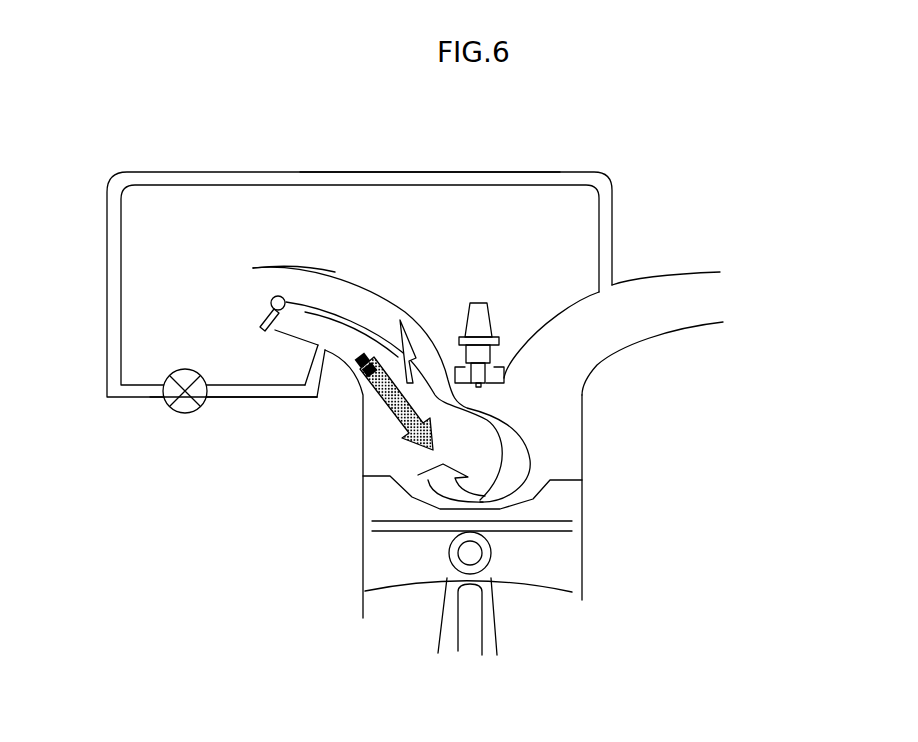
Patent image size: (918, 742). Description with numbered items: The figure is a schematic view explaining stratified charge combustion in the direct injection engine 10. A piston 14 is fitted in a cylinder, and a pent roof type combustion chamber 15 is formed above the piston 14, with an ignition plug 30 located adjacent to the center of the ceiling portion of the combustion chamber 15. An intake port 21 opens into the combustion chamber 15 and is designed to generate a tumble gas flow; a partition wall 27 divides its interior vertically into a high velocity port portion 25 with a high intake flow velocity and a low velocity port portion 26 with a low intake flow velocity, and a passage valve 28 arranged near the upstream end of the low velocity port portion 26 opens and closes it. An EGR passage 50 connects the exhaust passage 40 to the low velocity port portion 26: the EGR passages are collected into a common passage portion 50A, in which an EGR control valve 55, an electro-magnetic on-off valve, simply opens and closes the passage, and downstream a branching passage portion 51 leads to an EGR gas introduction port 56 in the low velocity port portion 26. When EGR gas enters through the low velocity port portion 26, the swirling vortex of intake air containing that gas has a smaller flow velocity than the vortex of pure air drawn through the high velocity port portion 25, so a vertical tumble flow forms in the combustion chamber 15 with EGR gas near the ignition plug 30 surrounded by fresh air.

The direct injection engine 10 is at (193, 153).
The EGR passage 50 is at (286, 166).
The common passage portion 50A is at (443, 180).
The intake port 21 is at (277, 280).
The high velocity port portion 25 is at (351, 291).
The partition wall 27 is at (333, 282).
The passage valve 28 is at (258, 330).
The low velocity port portion 26 is at (300, 335).
The ignition plug 30 is at (480, 303).
The exhaust passage 40 is at (604, 334).
The combustion chamber 15 is at (579, 436).
The piston 14 is at (363, 554).
The EGR control valve 55 is at (185, 413).
The branching passage portion 51 is at (275, 400).
The EGR gas introduction port 56 is at (328, 355).